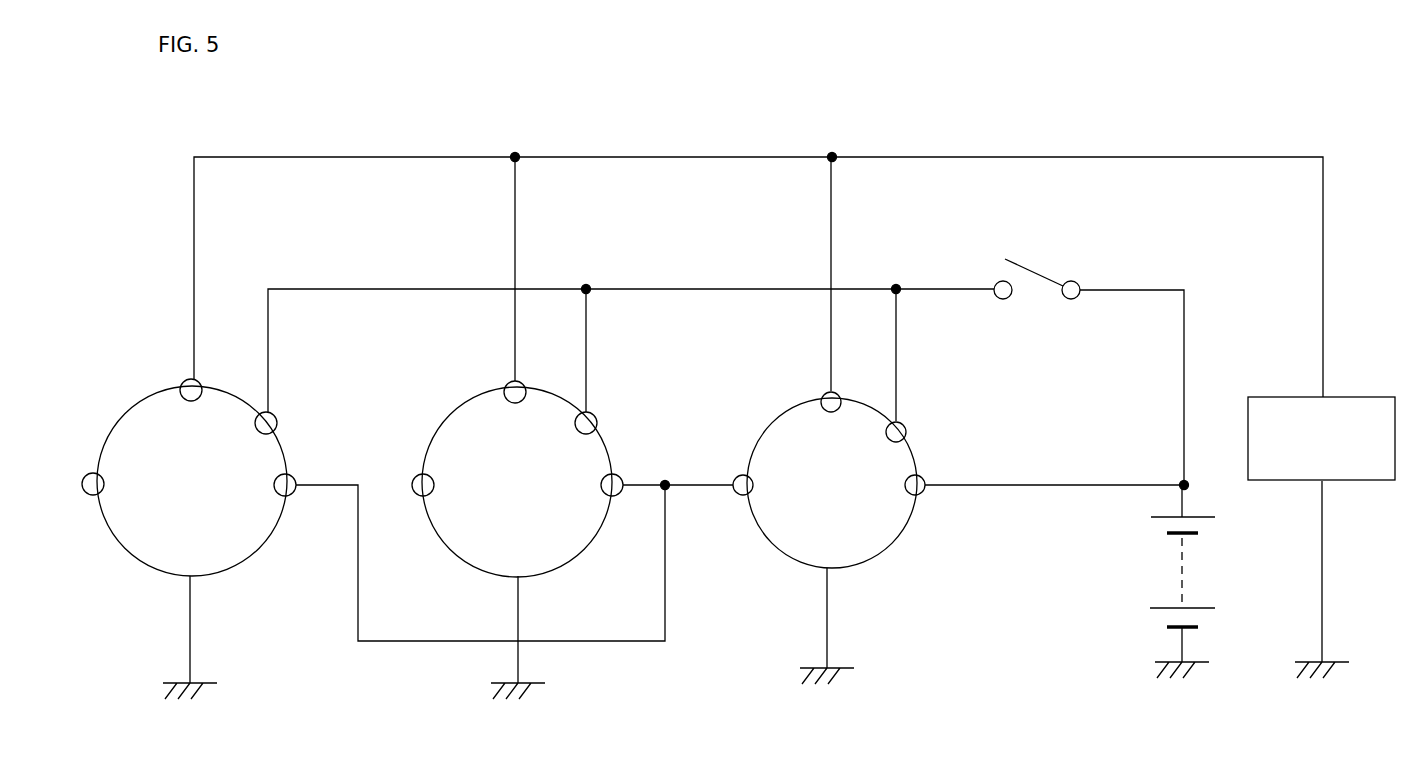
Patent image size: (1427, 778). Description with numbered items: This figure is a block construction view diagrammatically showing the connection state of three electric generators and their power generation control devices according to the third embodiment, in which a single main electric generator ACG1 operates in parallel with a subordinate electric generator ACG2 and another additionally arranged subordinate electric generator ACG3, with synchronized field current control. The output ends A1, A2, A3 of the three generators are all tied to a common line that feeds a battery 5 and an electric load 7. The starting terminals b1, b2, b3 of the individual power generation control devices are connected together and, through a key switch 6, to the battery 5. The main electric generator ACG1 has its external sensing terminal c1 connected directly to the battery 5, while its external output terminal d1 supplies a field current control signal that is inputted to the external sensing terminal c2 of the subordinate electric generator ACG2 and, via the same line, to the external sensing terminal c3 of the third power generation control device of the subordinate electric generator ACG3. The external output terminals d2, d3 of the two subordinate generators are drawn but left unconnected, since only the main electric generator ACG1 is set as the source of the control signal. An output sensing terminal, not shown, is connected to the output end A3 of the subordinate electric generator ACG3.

The battery 5 is at (1163, 580).
The key switch 6 is at (1046, 273).
The electric load 7 is at (1362, 397).
The main electric generator ACG1 is at (768, 421).
The subordinate electric generator ACG2 is at (443, 416).
The subordinate electric generator ACG3 is at (123, 416).
The output end A1 is at (815, 392).
The starting terminal b1 is at (915, 423).
The external sensing terminal c1 is at (932, 475).
The external output terminal d1 is at (730, 475).
The output end A2 is at (495, 386).
The starting terminal b2 is at (602, 411).
The external sensing terminal c2 is at (625, 475).
The external output terminal d2 is at (408, 475).
The output end A3 is at (174, 380).
The starting terminal b3 is at (283, 410).
The external sensing terminal c3 is at (301, 475).
The external output terminal d3 is at (82, 468).